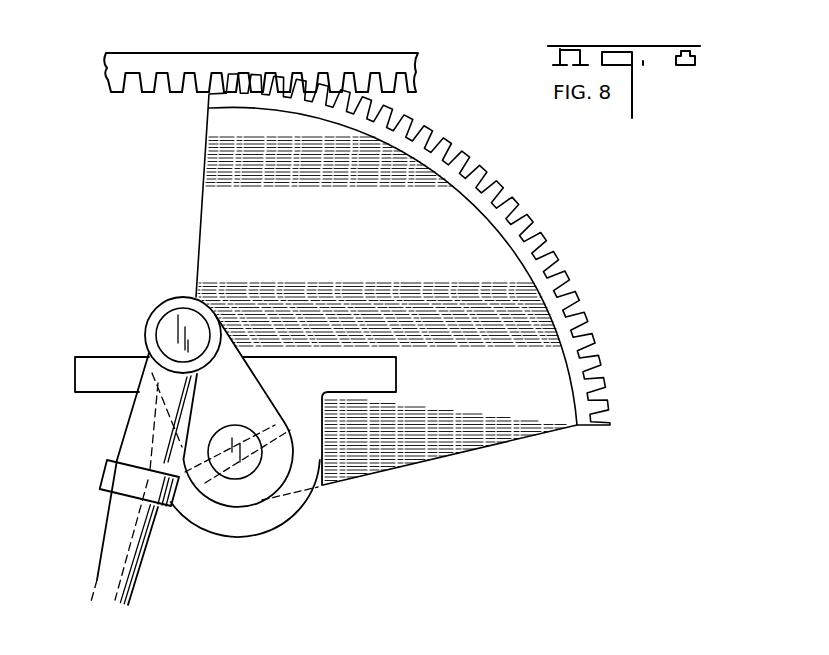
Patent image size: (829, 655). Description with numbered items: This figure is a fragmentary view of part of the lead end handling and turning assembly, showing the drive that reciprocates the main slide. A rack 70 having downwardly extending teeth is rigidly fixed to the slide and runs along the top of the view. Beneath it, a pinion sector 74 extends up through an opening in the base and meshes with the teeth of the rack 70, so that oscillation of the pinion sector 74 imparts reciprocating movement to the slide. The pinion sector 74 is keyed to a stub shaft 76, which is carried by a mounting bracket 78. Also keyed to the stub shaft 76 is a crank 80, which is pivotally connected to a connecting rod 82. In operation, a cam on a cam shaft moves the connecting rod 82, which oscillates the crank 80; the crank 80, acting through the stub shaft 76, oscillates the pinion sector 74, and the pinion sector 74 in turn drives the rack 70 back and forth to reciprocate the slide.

The rack 70 is at (405, 60).
The pinion sector 74 is at (218, 201).
The stub shaft 76 is at (243, 456).
The mounting bracket 78 is at (307, 460).
The crank 80 is at (237, 389).
The connecting rod 82 is at (105, 553).